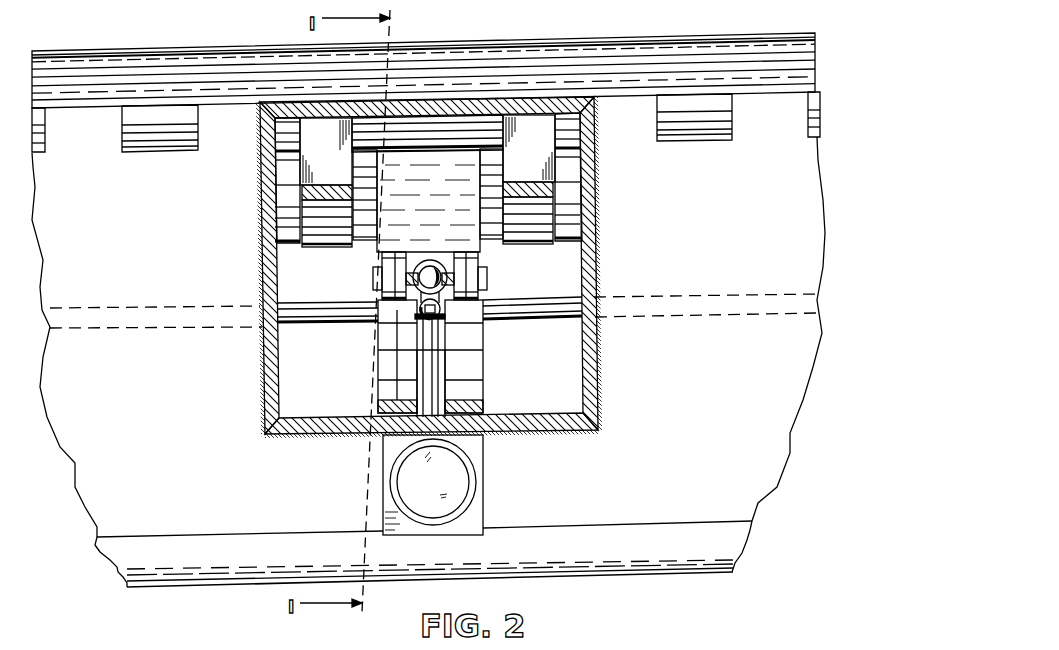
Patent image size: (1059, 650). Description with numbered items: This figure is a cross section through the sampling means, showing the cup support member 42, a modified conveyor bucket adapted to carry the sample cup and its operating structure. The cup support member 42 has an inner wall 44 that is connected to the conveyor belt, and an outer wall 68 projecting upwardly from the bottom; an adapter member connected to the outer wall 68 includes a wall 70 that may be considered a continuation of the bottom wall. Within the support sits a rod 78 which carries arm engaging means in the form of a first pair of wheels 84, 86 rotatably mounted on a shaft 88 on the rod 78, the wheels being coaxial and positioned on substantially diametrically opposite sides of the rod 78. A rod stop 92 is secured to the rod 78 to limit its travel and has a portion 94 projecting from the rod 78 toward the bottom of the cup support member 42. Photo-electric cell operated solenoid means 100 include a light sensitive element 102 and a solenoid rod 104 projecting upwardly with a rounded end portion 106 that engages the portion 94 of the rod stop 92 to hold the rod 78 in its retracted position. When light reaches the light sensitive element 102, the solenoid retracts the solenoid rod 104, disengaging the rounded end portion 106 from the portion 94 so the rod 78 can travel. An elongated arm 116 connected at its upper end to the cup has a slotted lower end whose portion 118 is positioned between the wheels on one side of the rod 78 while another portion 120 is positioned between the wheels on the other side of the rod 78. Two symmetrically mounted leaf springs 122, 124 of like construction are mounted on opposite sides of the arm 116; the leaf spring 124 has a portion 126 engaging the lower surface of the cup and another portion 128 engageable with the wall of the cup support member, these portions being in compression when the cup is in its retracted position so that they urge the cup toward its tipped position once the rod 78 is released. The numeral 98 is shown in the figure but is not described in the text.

The cup support member 42 is at (160, 403).
The inner wall 44 is at (503, 356).
The outer wall 68 is at (767, 466).
The adapter wall 70 is at (329, 442).
The rod 78 is at (481, 281).
The first wheel 84 is at (392, 262).
The second wheel 86 is at (470, 267).
The shaft 88 is at (414, 271).
The rod stop 92 is at (437, 264).
The projecting portion of rod stop 94 is at (446, 318).
The partition plate 98 is at (350, 321).
The photo-electric cell operated solenoid means 100 is at (480, 508).
The light sensitive element 102 is at (410, 485).
The solenoid rod 104 is at (439, 338).
The rounded end portion 106 is at (419, 318).
The elongated arm 116 is at (425, 216).
The arm slotted portion 118 is at (390, 368).
The arm slotted portion 120 is at (473, 368).
The leaf spring 122 is at (315, 157).
The leaf spring 124 is at (597, 172).
The leaf spring portion 126 is at (598, 227).
The leaf spring portion 128 is at (528, 122).